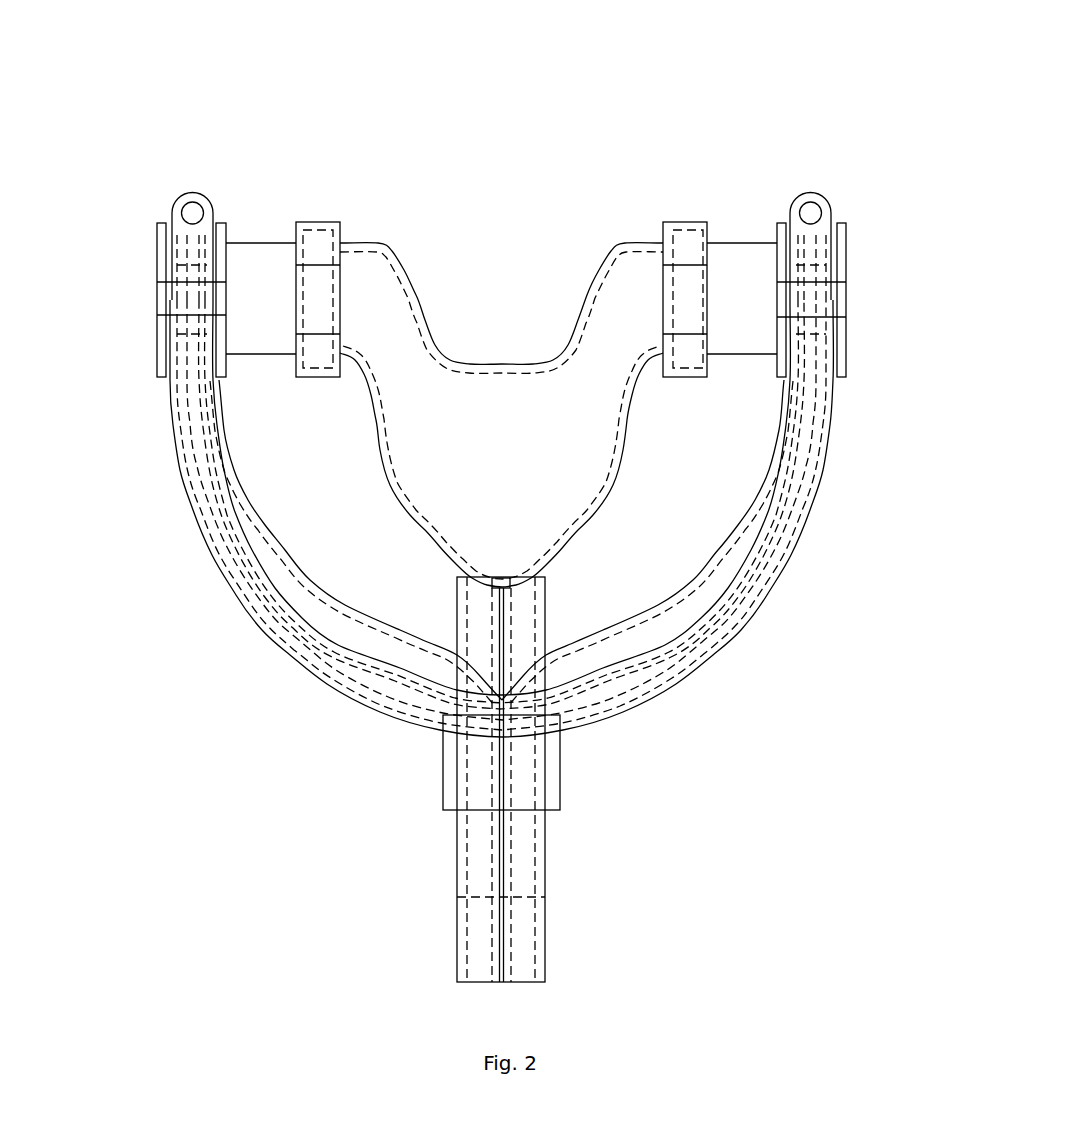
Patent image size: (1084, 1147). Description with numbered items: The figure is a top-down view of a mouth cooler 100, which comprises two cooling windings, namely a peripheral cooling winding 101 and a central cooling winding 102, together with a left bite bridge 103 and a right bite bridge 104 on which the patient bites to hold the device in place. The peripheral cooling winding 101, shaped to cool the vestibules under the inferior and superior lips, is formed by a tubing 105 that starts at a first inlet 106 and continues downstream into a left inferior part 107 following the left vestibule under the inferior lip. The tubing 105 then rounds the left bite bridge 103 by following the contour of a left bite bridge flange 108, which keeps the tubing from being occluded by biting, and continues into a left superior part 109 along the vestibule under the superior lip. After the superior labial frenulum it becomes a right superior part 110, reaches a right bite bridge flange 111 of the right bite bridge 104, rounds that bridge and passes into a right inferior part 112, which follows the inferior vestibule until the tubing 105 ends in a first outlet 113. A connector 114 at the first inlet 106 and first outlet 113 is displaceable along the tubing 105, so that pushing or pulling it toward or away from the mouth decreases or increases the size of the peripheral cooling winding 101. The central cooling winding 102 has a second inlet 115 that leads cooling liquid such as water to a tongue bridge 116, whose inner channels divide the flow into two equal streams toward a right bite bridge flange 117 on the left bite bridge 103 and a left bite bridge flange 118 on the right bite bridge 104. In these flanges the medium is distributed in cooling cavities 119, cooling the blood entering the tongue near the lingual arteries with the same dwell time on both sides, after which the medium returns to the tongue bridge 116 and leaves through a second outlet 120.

The mouth cooler 100 is at (861, 166).
The peripheral cooling winding 101 is at (809, 486).
The central cooling winding 102 is at (459, 572).
The left bite bridge 103 is at (722, 241).
The right bite bridge 104 is at (270, 241).
The tubing 105 is at (766, 628).
The first inlet 106 is at (519, 935).
The left inferior part 107 is at (684, 586).
The left bite bridge flange 108 is at (776, 221).
The left superior part 109 is at (705, 675).
The right superior part 110 is at (346, 702).
The right bite bridge flange 111 is at (222, 221).
The right inferior part 112 is at (166, 207).
The first outlet 113 is at (470, 935).
The connector 114 is at (442, 805).
The second inlet 115 is at (530, 598).
The tongue bridge 116 is at (529, 378).
The right bite bridge flange 117 is at (683, 221).
The left bite bridge flange 118 is at (318, 221).
The cooling cavities 119 is at (678, 253).
The second outlet 120 is at (465, 621).